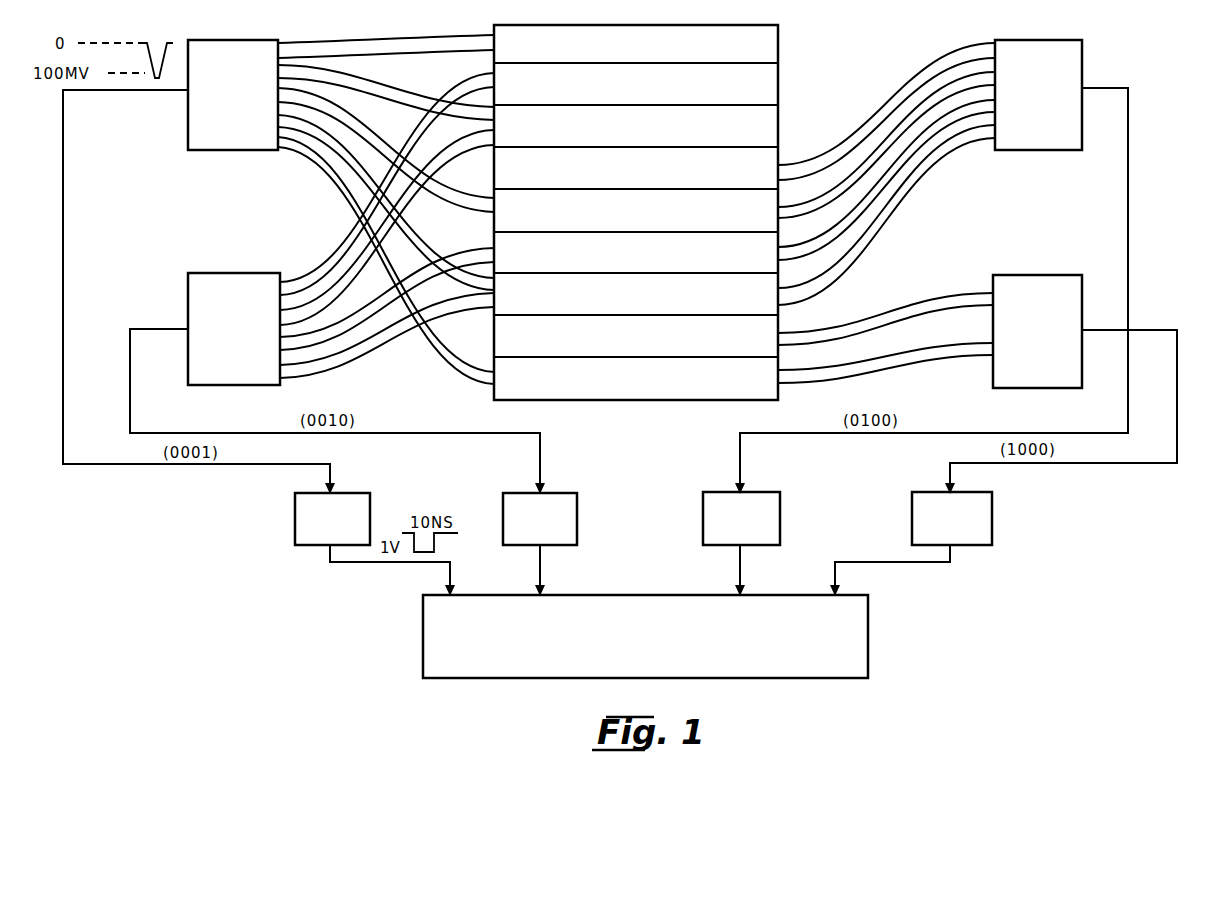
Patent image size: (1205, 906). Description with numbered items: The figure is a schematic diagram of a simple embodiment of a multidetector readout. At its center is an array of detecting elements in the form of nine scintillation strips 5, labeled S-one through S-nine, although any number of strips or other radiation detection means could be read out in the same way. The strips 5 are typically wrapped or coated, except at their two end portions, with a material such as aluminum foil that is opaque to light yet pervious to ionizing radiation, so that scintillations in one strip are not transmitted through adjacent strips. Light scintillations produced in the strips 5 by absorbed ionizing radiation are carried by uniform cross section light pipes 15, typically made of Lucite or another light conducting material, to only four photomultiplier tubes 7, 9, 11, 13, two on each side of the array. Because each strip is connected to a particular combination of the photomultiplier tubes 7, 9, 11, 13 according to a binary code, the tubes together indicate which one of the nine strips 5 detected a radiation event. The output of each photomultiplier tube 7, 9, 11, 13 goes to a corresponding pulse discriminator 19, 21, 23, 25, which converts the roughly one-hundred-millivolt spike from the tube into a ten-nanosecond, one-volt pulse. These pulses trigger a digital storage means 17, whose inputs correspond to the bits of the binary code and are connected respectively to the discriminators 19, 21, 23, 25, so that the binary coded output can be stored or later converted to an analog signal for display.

The scintillation strips 5 is at (730, 105).
The photomultiplier tube 7 is at (249, 40).
The photomultiplier tube 9 is at (244, 273).
The photomultiplier tube 11 is at (1034, 40).
The photomultiplier tube 13 is at (1040, 275).
The light pipes 15 is at (443, 83).
The digital storage means 17 is at (870, 606).
The pulse discriminator 19 is at (352, 493).
The pulse discriminator 21 is at (558, 493).
The pulse discriminator 23 is at (760, 492).
The pulse discriminator 25 is at (982, 492).